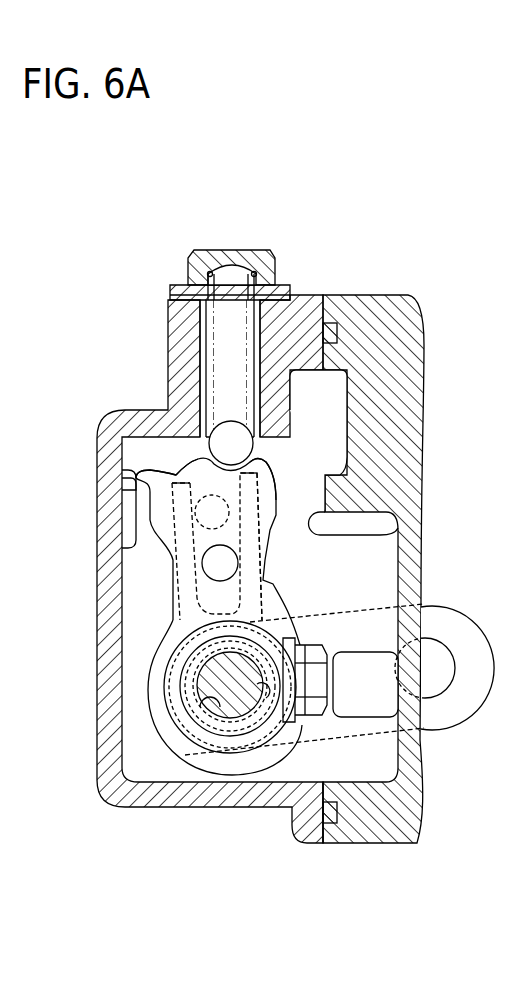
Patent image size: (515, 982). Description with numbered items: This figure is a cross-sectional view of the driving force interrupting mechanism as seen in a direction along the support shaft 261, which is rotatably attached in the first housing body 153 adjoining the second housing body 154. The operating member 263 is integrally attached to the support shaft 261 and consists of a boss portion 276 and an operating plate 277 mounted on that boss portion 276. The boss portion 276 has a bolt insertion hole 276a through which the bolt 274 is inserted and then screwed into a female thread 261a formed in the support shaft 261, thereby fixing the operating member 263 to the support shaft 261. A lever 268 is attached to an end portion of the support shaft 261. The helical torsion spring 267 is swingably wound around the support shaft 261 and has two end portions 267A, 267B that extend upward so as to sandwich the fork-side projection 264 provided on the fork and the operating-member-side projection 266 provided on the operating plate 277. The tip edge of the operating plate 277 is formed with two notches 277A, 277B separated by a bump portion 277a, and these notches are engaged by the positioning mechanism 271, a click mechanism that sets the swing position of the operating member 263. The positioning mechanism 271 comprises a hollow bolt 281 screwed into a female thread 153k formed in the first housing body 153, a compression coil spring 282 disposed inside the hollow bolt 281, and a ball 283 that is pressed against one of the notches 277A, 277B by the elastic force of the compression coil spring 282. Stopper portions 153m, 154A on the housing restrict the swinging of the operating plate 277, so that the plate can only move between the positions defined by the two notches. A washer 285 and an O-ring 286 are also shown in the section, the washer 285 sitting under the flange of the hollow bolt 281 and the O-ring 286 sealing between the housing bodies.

The positioning mechanism 271 is at (188, 250).
The female thread 153k is at (252, 318).
The hollow bolt 281 is at (209, 250).
The compression coil spring 282 is at (263, 250).
The first housing body 153 is at (313, 293).
The second housing body 154 is at (388, 293).
The O-ring 286 is at (332, 326).
The washer 285 is at (168, 298).
The bump portion 277a is at (198, 410).
The ball 283 is at (298, 432).
The notch 277B is at (192, 476).
The notch 277A is at (262, 458).
The stopper portion 153m is at (122, 472).
The end portion of helical torsion spring 267A is at (325, 480).
The fork-side projection 264 is at (150, 500).
The stopper portion 154A is at (335, 538).
The end portion of helical torsion spring 267B is at (172, 505).
The operating-member-side projection 266 is at (228, 563).
The operating plate 277 is at (168, 550).
The helical torsion spring 267 is at (263, 582).
The operating member 263 is at (173, 600).
The boss portion 276 is at (188, 700).
The lever 268 is at (455, 706).
The bolt 274 is at (420, 760).
The female thread 261a is at (201, 704).
The support shaft 261 is at (228, 716).
The bolt insertion hole 276a is at (259, 702).